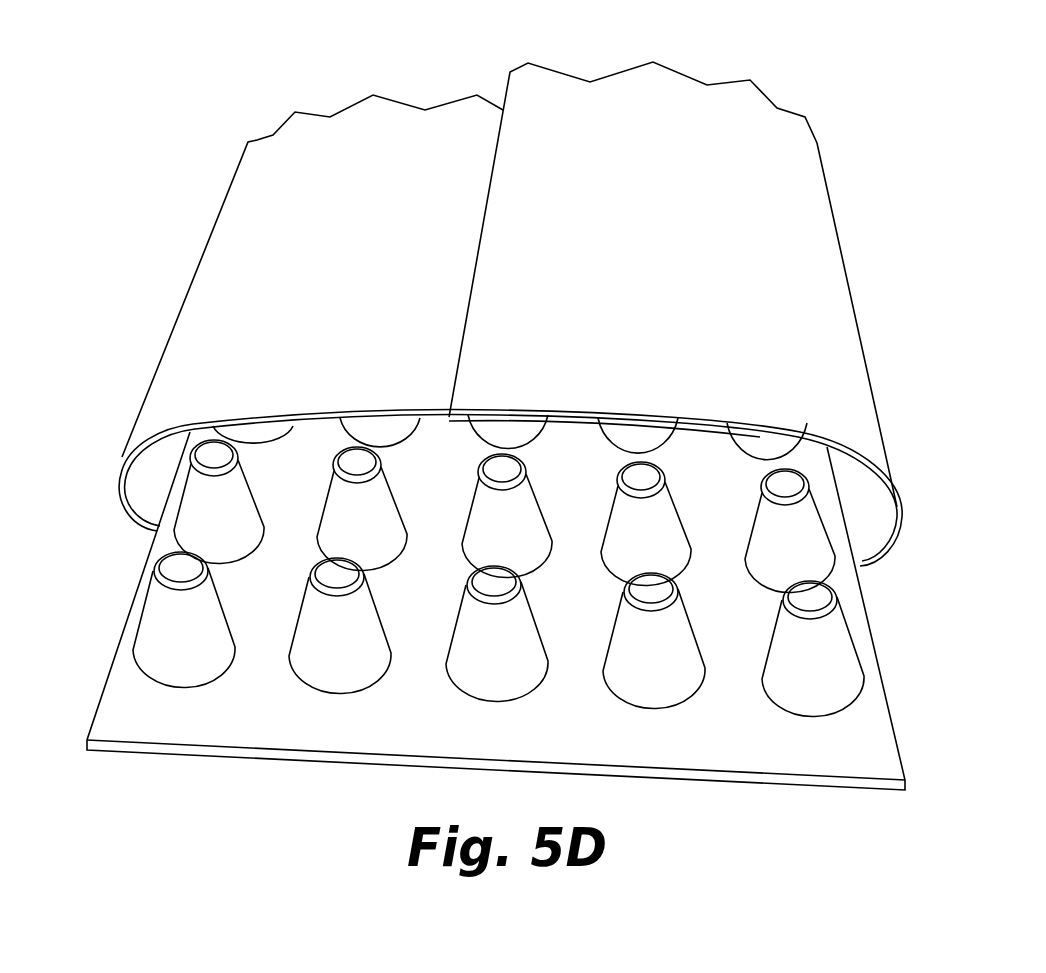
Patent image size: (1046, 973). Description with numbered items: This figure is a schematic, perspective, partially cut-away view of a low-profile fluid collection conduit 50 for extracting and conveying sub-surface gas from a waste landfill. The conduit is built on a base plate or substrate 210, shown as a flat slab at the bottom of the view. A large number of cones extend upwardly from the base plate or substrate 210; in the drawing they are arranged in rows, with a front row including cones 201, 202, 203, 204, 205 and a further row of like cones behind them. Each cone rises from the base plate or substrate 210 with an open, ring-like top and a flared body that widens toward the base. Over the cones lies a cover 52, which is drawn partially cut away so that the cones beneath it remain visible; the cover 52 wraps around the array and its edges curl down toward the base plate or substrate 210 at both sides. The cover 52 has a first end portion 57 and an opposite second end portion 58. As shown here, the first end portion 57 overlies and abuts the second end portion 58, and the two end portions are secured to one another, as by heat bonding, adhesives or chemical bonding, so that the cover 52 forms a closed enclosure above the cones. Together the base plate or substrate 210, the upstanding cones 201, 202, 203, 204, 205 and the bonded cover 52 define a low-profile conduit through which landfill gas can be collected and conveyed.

The flexible sheet assembly 50 is at (135, 278).
The cover 52 is at (320, 281).
The first end portion 57 is at (522, 236).
The second end portion 58 is at (703, 448).
The cone 201 is at (807, 682).
The cone 202 is at (648, 672).
The cone 203 is at (490, 665).
The cone 204 is at (336, 657).
The cone 205 is at (179, 648).
The base plate or substrate 210 is at (418, 729).